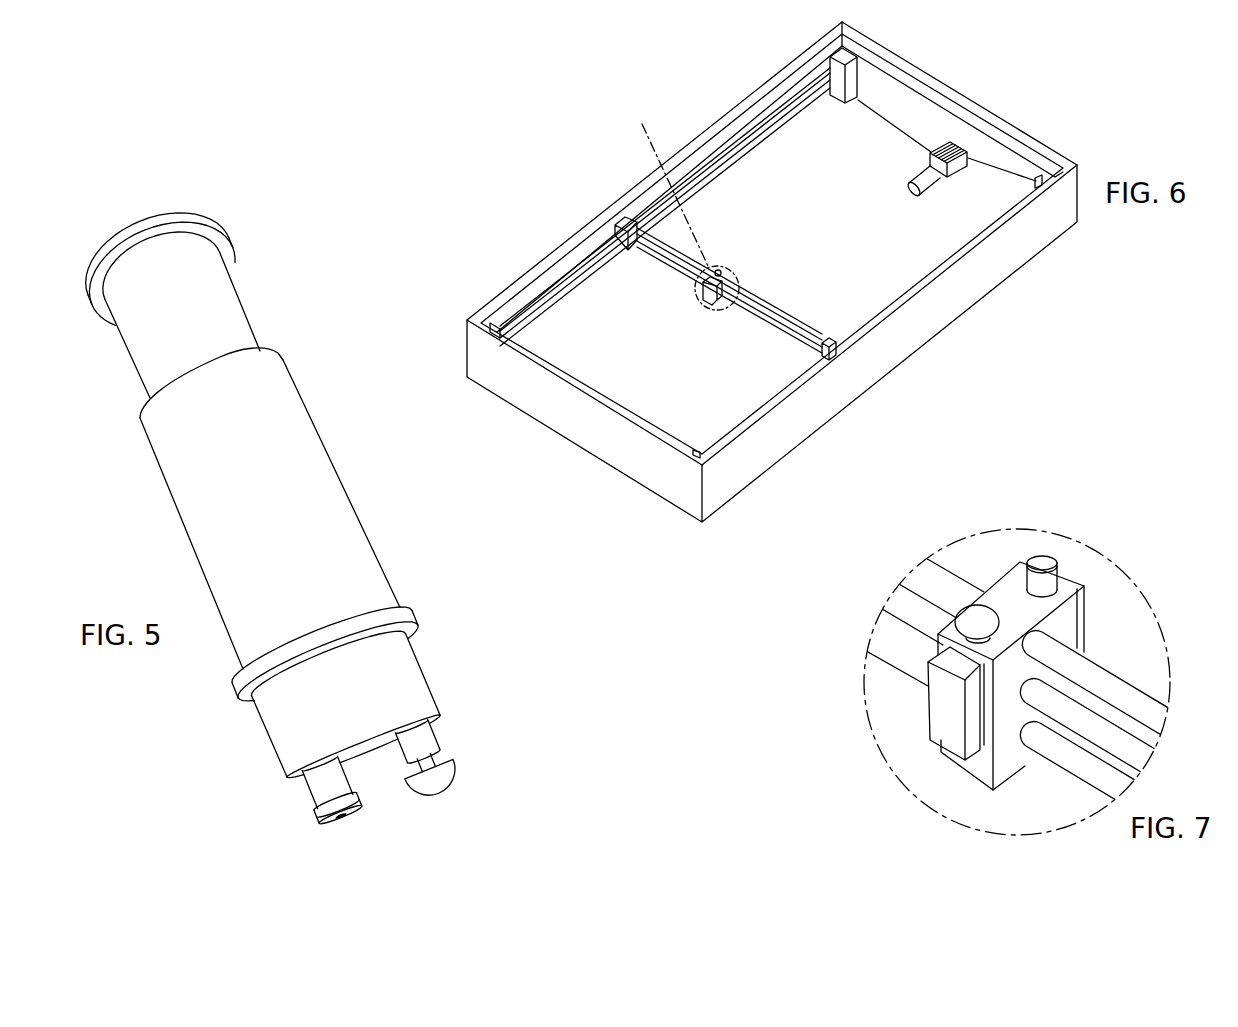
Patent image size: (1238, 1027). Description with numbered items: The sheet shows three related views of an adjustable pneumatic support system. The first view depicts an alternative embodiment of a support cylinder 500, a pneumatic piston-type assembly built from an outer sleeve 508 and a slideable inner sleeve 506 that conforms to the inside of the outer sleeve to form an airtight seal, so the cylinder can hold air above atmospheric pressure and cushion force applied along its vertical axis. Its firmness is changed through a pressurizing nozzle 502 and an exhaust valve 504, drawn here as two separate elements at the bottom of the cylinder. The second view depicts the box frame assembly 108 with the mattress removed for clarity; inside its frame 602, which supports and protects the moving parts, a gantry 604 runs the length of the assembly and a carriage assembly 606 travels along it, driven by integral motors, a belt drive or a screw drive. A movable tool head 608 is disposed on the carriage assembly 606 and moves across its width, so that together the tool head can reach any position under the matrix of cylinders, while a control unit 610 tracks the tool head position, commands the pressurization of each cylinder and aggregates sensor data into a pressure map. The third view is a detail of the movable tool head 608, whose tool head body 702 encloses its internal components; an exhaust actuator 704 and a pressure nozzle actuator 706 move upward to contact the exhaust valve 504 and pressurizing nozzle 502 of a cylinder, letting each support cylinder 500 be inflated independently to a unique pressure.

In FIG. 5, the support cylinder 500 is at (268, 238).
In FIG. 5, the pressurizing nozzle 502 is at (302, 783).
In FIG. 5, the exhaust valve 504 is at (440, 742).
In FIG. 5, the inner sleeve 506 is at (236, 290).
In FIG. 5, the outer sleeve 508 is at (325, 443).
In FIG. 6, the box frame assembly 108 is at (590, 152).
In FIG. 6, the frame 602 is at (1020, 268).
In FIG. 6, the gantry 604 is at (537, 290).
In FIG. 6, the carriage assembly 606 is at (780, 318).
In FIG. 7, the carriage assembly 606 is at (1130, 687).
In FIG. 6, the movable tool head 608 is at (717, 304).
In FIG. 7, the movable tool head 608 is at (1052, 495).
In FIG. 6, the control unit 610 is at (962, 158).
In FIG. 7, the tool head body 702 is at (943, 753).
In FIG. 7, the exhaust actuator 704 is at (960, 617).
In FIG. 7, the pressure nozzle actuator 706 is at (1043, 558).